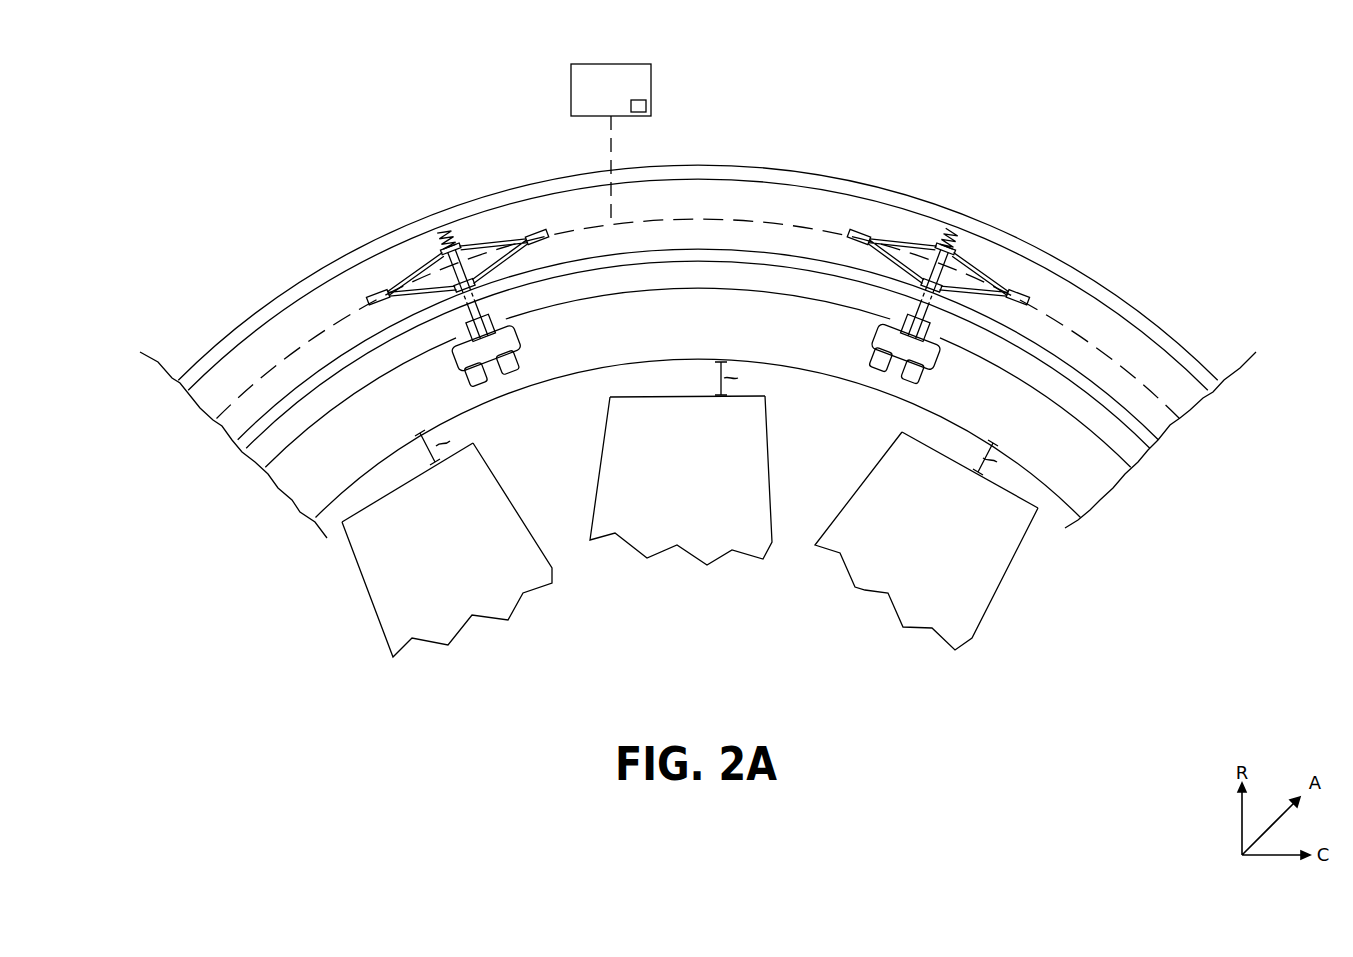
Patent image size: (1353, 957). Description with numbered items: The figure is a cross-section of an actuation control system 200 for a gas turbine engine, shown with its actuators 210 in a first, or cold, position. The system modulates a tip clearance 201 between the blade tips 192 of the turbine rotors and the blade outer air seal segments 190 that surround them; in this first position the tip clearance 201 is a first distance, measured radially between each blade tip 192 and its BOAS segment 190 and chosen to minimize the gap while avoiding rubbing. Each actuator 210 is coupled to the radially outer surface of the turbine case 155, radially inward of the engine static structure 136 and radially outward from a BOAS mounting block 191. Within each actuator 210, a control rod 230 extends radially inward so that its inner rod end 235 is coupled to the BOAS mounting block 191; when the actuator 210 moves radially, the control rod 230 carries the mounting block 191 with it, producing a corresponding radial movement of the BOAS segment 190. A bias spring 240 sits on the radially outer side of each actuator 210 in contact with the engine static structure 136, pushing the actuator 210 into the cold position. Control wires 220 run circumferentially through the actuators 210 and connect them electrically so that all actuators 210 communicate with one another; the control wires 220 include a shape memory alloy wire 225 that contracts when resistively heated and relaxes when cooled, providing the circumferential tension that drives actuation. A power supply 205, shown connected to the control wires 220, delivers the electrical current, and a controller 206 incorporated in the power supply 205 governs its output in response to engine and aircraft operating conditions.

The engine static structure 136 is at (193, 362).
The turbine case 155 is at (263, 420).
The blade outer air seal (BOAS) segment 190 is at (293, 490).
The BOAS mounting block 191 is at (513, 347).
The blade tip 192 is at (690, 512).
The actuation control system 200 is at (1156, 188).
The tip clearance 201 is at (690, 445).
The power supply 205 is at (575, 68).
The controller 206 is at (648, 104).
The actuator 210 is at (405, 258).
The control wire 220 is at (273, 362).
The shape memory alloy (SMA) wire 225 is at (427, 275).
The control rod 230 is at (462, 265).
The inner rod end 235 is at (485, 347).
The bias spring 240 is at (443, 228).